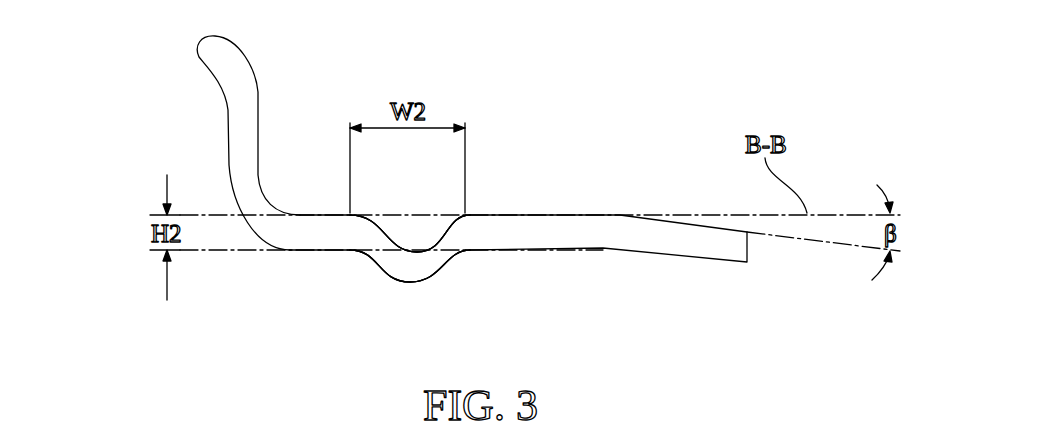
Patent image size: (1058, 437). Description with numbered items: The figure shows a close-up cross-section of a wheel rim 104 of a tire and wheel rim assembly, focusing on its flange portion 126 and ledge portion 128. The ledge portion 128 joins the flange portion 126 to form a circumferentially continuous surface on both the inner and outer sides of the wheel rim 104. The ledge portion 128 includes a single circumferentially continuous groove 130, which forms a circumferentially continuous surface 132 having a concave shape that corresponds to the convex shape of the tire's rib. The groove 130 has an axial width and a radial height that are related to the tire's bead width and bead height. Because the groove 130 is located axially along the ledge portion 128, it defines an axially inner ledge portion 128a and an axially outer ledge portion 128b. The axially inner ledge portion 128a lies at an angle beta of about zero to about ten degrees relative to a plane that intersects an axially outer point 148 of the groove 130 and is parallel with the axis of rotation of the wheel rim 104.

The wheel rim 104 is at (191, 142).
The flange portion 126 is at (240, 83).
The ledge portion 128 is at (483, 160).
The axially inner ledge portion 128a is at (485, 233).
The axially outer ledge portion 128b is at (343, 237).
The single circumferentially continuous groove 130 is at (416, 232).
The circumferentially continuous surface 132 is at (415, 230).
The axially outer point 148 is at (350, 215).